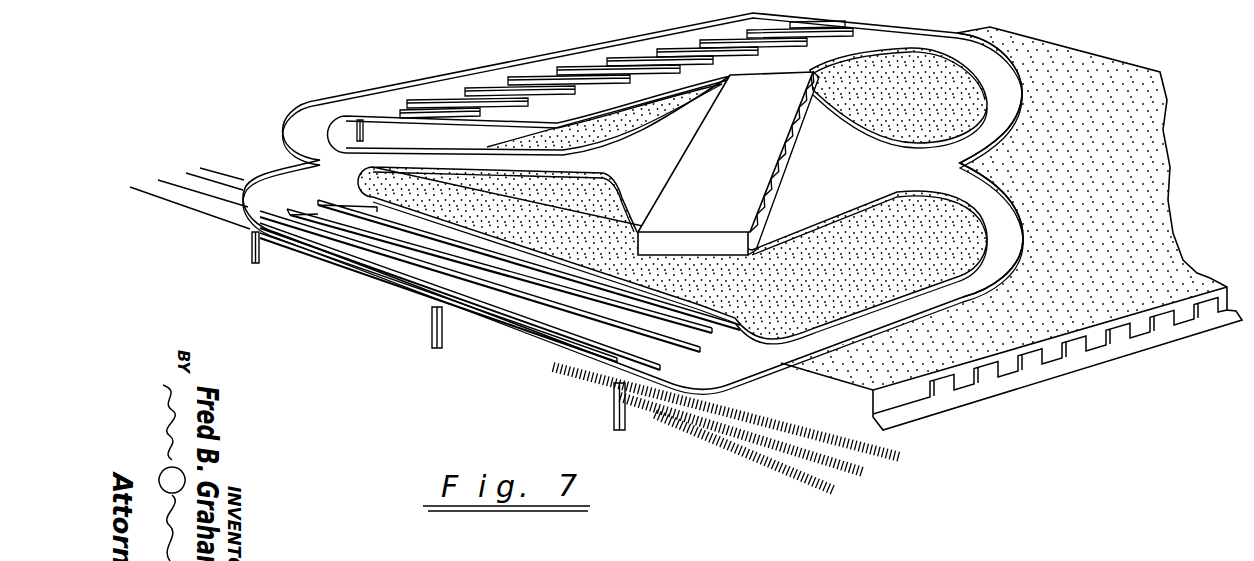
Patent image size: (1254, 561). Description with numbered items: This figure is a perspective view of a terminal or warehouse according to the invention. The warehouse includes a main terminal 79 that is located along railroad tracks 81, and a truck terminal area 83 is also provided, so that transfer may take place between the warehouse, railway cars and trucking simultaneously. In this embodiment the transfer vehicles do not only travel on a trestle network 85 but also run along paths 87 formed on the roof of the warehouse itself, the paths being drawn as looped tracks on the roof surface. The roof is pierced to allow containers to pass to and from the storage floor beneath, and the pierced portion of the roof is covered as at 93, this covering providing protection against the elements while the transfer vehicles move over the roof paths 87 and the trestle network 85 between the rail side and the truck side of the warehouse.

The main terminal 79 is at (1110, 365).
The railroad tracks 81 is at (898, 461).
The truck terminal area 83 is at (428, 78).
The trestle network 85 is at (283, 160).
The paths 87 is at (1016, 102).
The covering 93 is at (782, 172).